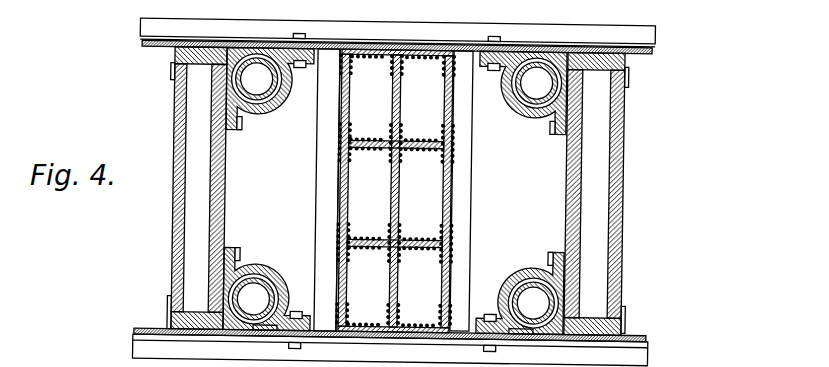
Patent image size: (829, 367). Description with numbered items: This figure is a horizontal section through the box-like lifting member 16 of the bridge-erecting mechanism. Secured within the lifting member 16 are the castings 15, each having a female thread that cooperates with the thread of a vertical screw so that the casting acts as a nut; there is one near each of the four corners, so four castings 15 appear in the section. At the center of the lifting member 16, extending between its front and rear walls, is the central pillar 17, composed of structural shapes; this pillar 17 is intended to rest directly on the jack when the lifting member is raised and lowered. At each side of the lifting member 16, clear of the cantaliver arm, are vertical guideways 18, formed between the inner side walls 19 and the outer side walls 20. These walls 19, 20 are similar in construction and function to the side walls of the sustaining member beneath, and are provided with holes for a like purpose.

The casting 15 is at (273, 101).
The box-like lifting member 16 is at (233, 198).
The central pillar 17 is at (430, 196).
The vertical guideways 18 is at (186, 224).
The inner side walls 19 is at (214, 153).
The outer side walls 20 is at (640, 169).